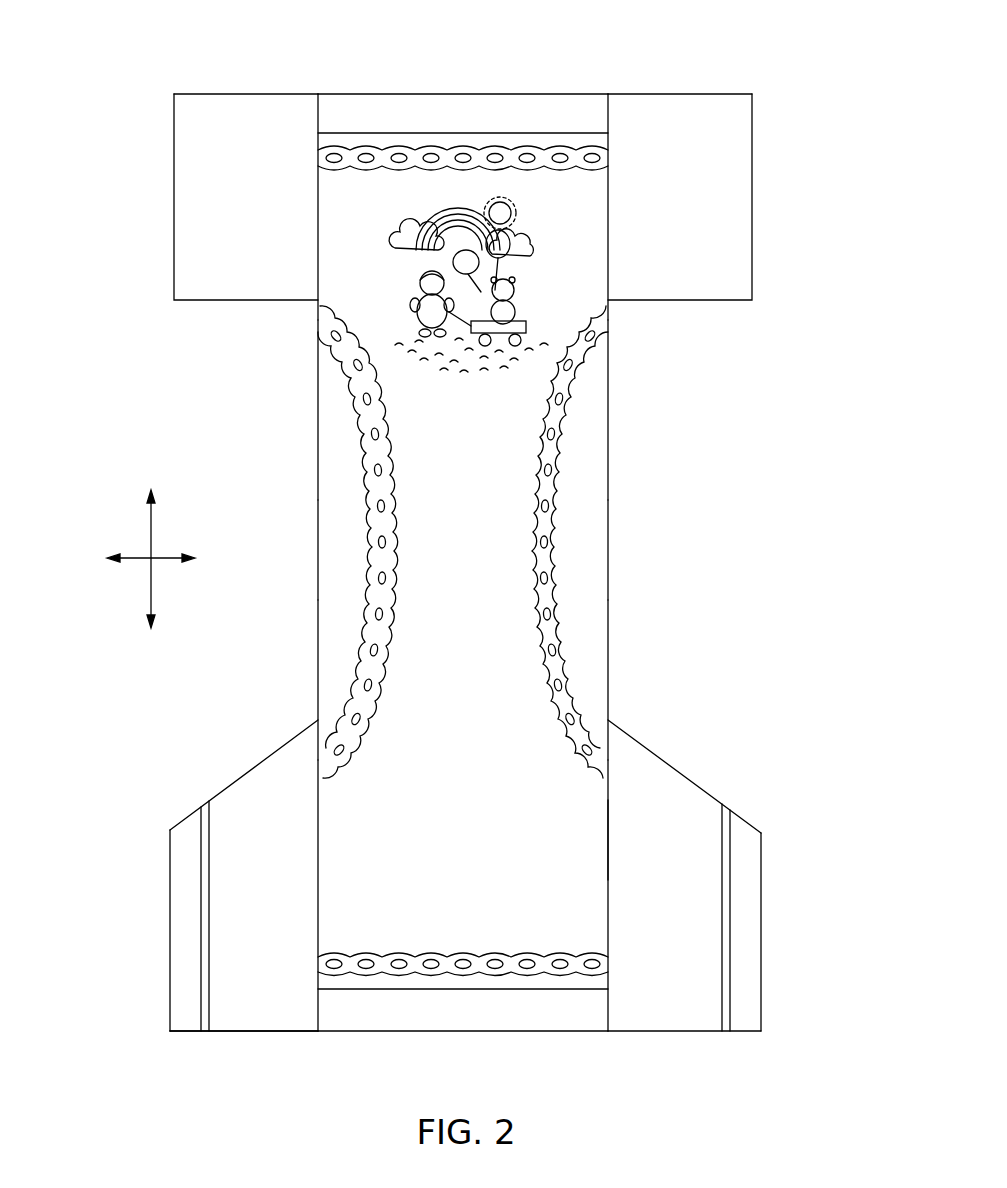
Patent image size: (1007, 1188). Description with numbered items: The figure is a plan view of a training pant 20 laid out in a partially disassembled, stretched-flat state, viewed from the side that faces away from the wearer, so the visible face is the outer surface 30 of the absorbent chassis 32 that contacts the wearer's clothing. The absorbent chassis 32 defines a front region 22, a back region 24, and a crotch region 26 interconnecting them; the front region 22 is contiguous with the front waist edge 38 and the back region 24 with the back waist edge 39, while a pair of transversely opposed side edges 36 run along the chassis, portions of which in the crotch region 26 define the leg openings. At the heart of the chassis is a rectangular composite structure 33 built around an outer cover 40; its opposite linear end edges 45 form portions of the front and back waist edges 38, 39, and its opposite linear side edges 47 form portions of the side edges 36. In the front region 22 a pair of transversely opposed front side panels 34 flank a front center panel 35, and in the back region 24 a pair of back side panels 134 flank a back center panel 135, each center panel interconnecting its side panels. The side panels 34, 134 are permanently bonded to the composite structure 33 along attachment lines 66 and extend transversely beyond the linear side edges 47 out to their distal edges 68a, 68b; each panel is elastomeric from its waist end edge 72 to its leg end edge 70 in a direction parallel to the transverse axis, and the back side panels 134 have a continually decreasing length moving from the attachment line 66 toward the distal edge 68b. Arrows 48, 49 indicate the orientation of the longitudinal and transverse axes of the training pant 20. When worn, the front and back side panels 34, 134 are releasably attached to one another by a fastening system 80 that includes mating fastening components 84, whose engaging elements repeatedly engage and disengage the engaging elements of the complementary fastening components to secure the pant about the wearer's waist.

The training pant 20 is at (237, 86).
The front region 22 is at (772, 266).
The back region 24 is at (331, 856).
The crotch region 26 is at (510, 482).
The outer surface 30 is at (597, 587).
The absorbent chassis 32 is at (547, 712).
The rectangular composite structure 33 is at (318, 665).
The front side panels 34 is at (237, 176).
The front center panel 35 is at (482, 84).
The side edges 36 is at (318, 486).
The front waist edge 38 is at (421, 93).
The back waist edge 39 is at (356, 1032).
The outer cover 40 is at (355, 343).
The linear end edges 45 is at (584, 93).
The linear side edges 47 is at (318, 531).
The longitudinal axis arrow 48 is at (150, 530).
The transverse axis arrow 49 is at (136, 562).
The attachment lines 66 is at (318, 220).
The distal edge of front side panel 68a is at (174, 236).
The distal edge of back side panel 68b is at (170, 962).
The leg end edge 70 is at (247, 300).
The waist end edge 72 is at (287, 93).
The fastening system 80 is at (774, 942).
The mating fastening components 84 is at (195, 890).
The back side panels 134 is at (226, 820).
The back center panel 135 is at (451, 915).